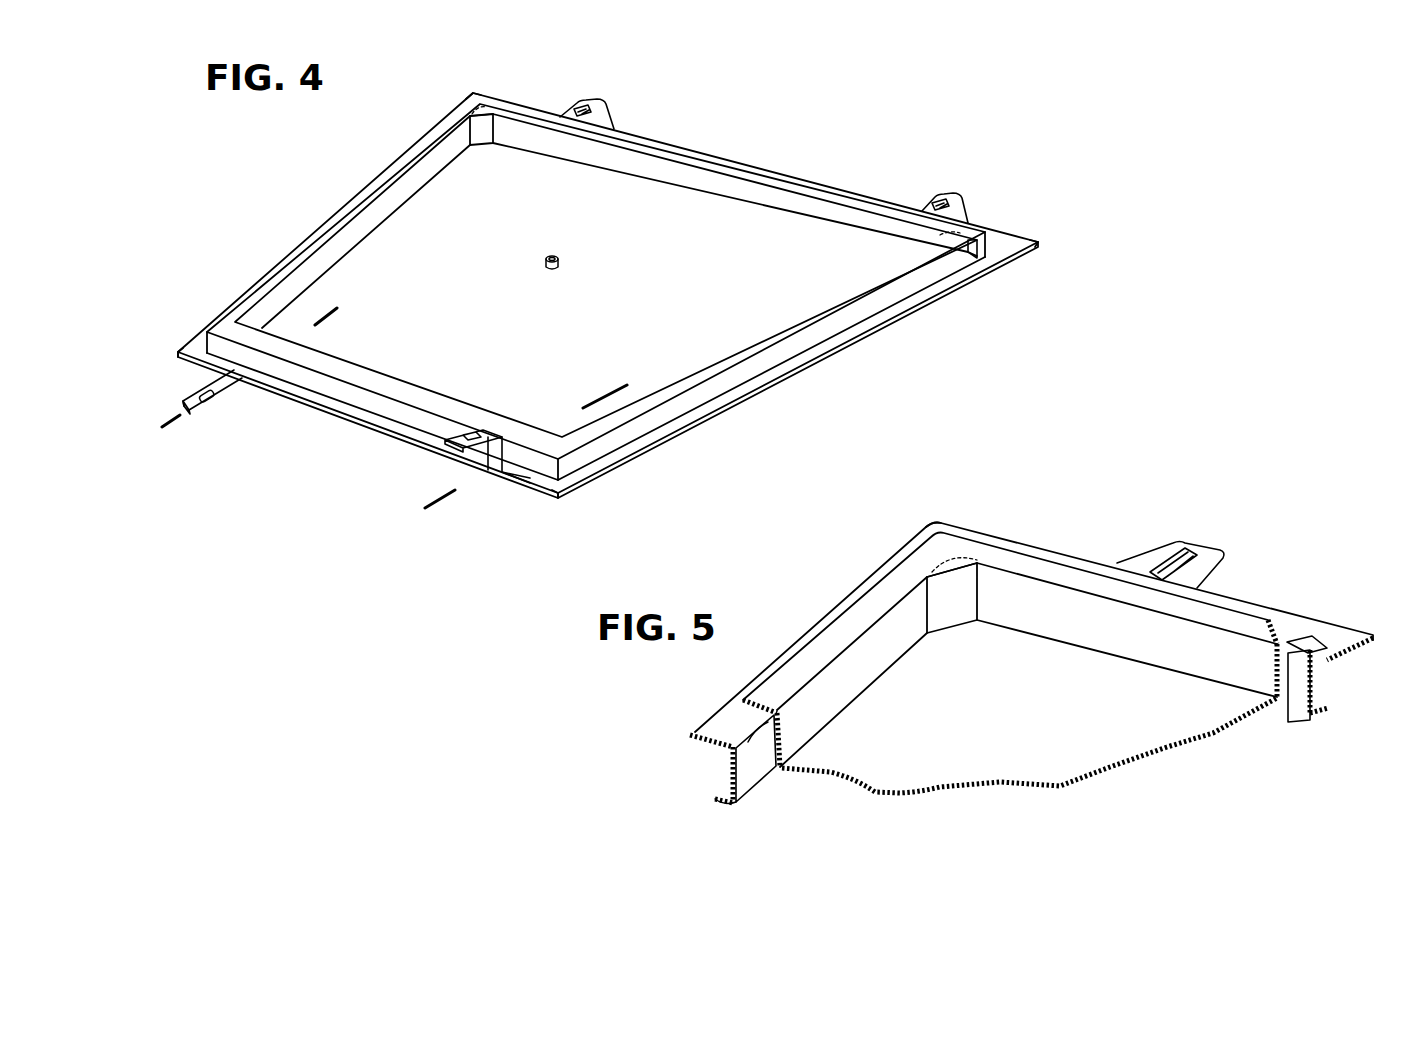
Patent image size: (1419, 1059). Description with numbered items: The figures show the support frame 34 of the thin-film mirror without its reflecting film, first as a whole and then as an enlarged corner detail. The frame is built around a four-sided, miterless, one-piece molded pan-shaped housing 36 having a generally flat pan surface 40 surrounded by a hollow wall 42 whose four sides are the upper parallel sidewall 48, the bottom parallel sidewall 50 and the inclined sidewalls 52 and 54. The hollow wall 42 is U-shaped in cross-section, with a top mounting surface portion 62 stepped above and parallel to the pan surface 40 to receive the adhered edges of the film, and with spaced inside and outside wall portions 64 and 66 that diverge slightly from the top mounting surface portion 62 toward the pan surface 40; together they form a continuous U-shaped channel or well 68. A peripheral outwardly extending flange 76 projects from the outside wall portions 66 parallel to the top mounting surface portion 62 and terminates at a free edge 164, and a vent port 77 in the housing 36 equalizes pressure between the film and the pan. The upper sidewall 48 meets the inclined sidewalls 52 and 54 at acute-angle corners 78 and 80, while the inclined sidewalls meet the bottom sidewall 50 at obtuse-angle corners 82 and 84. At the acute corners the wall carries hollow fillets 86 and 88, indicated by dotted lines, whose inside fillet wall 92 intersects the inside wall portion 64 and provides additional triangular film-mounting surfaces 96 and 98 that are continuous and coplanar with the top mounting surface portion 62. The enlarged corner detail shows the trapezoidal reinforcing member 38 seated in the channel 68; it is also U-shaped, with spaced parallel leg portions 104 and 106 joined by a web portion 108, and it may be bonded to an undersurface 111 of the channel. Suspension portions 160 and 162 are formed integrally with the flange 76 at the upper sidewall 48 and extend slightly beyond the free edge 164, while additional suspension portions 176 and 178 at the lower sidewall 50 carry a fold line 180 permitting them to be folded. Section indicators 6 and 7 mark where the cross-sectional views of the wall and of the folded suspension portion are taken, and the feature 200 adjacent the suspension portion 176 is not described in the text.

In FIG. 4, the support frame 34 is at (792, 80).
In FIG. 5, the support frame 34 is at (1223, 479).
In FIG. 4, the pan-shaped housing 36 is at (708, 150).
In FIG. 5, the pan-shaped housing 36 is at (1034, 538).
In FIG. 5, the reinforcing member 38 is at (1321, 723).
In FIG. 4, the pan surface 40 is at (618, 285).
In FIG. 5, the pan surface 40 is at (997, 746).
In FIG. 4, the hollow wall 42 is at (894, 318).
In FIG. 4, the upper parallel sidewall 48 is at (764, 170).
In FIG. 4, the bottom parallel sidewall 50 is at (377, 400).
In FIG. 4, the inclined sidewall 52 is at (808, 344).
In FIG. 4, the inclined sidewall 54 is at (331, 215).
In FIG. 4, the top mounting surface portion 62 is at (815, 190).
In FIG. 5, the top mounting surface portion 62 is at (843, 627).
In FIG. 4, the inside wall portion 64 is at (766, 207).
In FIG. 5, the inside wall portion 64 is at (1187, 660).
In FIG. 4, the outside wall portion 66 is at (735, 383).
In FIG. 5, the U-shaped channel 68 is at (758, 790).
In FIG. 4, the flange 76 is at (420, 140).
In FIG. 5, the flange 76 is at (740, 690).
In FIG. 4, the vent port 77 is at (545, 258).
In FIG. 4, the corner 78 is at (1022, 238).
In FIG. 4, the corner 80 is at (468, 91).
In FIG. 5, the corner 80 is at (958, 522).
In FIG. 4, the corner 82 is at (200, 345).
In FIG. 4, the corner 84 is at (590, 477).
In FIG. 4, the hollow fillet 86 is at (492, 142).
In FIG. 5, the hollow fillet 86 is at (968, 605).
In FIG. 4, the hollow fillet 88 is at (928, 242).
In FIG. 4, the inside fillet wall 92 is at (478, 148).
In FIG. 5, the inside fillet wall 92 is at (948, 620).
In FIG. 4, the triangular film-mounting surface 96 is at (480, 100).
In FIG. 5, the triangular film-mounting surface 96 is at (946, 560).
In FIG. 4, the triangular film-mounting surface 98 is at (957, 234).
In FIG. 5, the leg portion 104 is at (722, 792).
In FIG. 5, the leg portion 106 is at (733, 728).
In FIG. 5, the web portion 108 is at (748, 787).
In FIG. 5, the undersurface 111 is at (775, 740).
In FIG. 4, the suspension portion 160 is at (598, 93).
In FIG. 5, the suspension portion 160 is at (1198, 543).
In FIG. 4, the suspension portion 162 is at (946, 196).
In FIG. 4, the free edge 164 is at (317, 412).
In FIG. 4, the suspension portion 176 is at (207, 387).
In FIG. 4, the suspension portion 178 is at (488, 435).
In FIG. 4, the fold line 180 is at (223, 387).
In FIG. 4, the tab end 200 is at (185, 398).
In FIG. 4, the section line 6- 6 is at (332, 322).
In FIG. 4, the section line 7- 7 is at (614, 403).